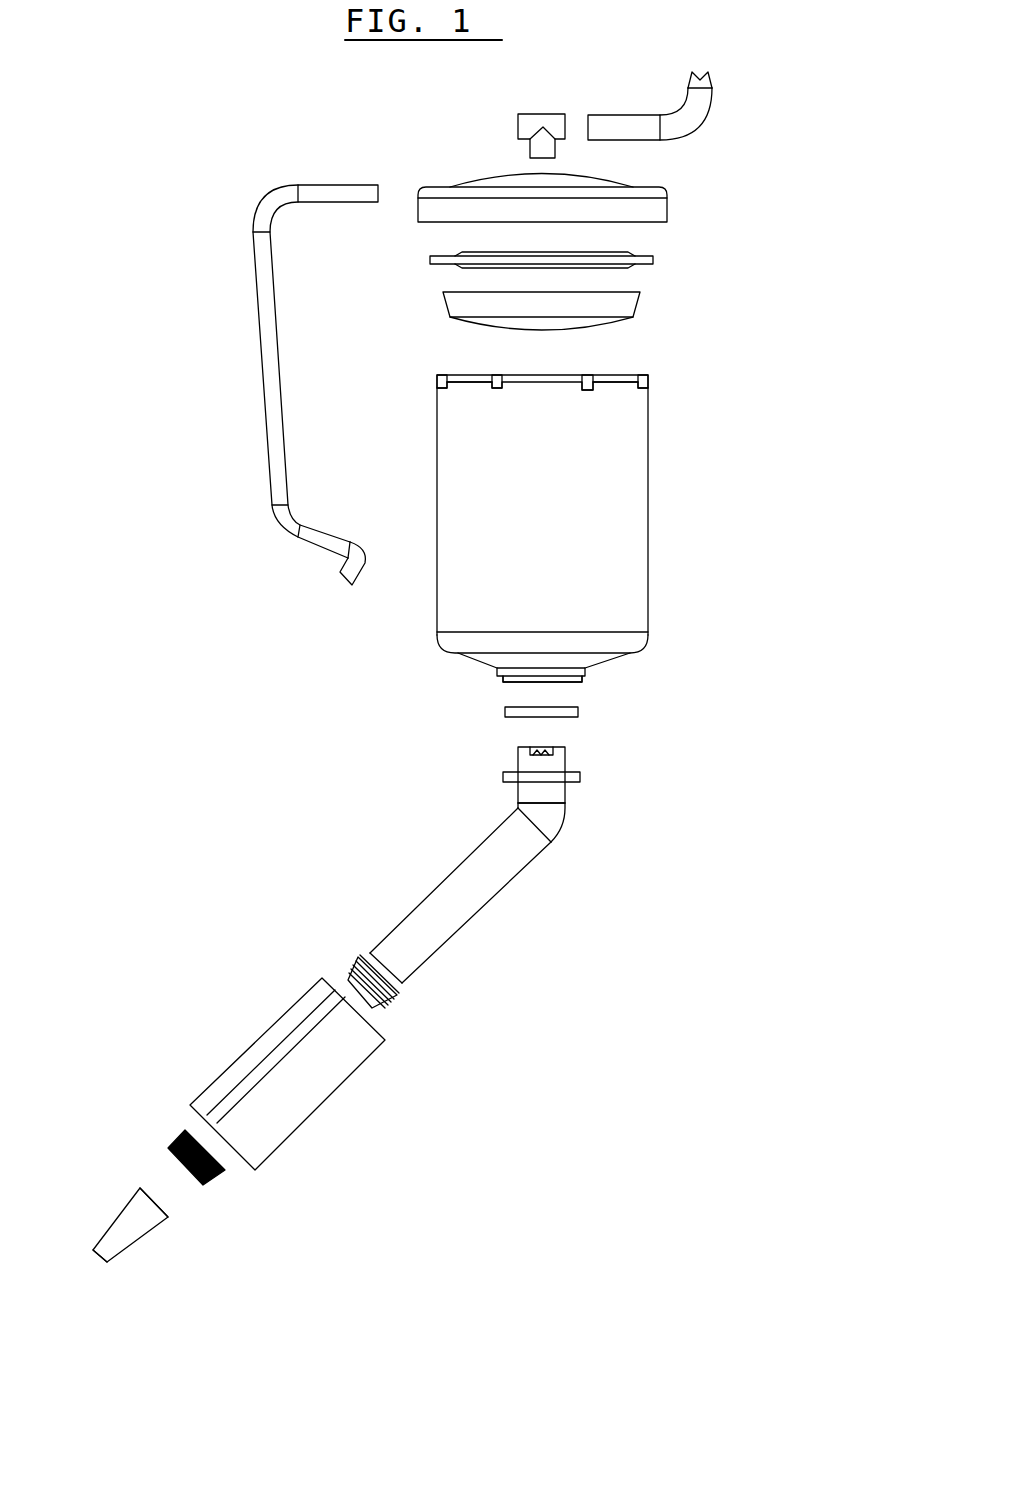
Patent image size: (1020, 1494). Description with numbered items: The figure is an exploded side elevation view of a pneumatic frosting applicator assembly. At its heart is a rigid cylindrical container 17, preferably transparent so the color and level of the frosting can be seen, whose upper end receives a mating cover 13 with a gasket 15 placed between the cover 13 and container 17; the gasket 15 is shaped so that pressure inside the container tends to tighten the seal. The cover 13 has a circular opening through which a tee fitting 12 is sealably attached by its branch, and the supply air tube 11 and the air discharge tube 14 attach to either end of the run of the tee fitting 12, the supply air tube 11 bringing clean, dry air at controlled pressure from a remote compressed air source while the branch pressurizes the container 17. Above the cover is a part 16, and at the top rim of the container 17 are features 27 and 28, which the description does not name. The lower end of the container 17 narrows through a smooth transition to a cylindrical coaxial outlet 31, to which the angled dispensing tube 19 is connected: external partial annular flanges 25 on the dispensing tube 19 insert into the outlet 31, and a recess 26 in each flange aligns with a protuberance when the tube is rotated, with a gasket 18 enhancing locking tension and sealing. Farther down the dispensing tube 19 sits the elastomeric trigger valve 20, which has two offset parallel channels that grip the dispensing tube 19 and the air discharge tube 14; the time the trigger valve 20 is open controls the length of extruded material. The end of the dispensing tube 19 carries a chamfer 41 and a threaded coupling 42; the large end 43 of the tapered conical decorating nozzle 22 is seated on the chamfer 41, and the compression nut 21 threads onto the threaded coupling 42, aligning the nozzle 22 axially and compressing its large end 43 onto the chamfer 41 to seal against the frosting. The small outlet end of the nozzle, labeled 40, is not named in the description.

The supply air tube 11 is at (670, 112).
The tee fitting 12 is at (522, 128).
The cover 13 is at (667, 193).
The air discharge tube 14 is at (258, 280).
The gasket 15 is at (653, 260).
The filter cup 16 is at (640, 308).
The container 17 is at (648, 588).
The gasket 18 is at (505, 712).
The dispensing tube 19 is at (487, 907).
The trigger valve 20 is at (320, 1108).
The compression nut 21 is at (220, 1177).
The decorating nozzle 22 is at (140, 1242).
The external partial annular flanges 25 is at (545, 755).
The recess 26 is at (545, 755).
The slots 27 is at (593, 375).
The tabs 28 is at (645, 388).
The cylindrical coaxial outlet 31 is at (552, 680).
The nozzle outlet 40 is at (102, 1262).
The chamfer 41 is at (348, 980).
The threaded coupling 42 is at (398, 995).
The large end 43 is at (158, 1203).